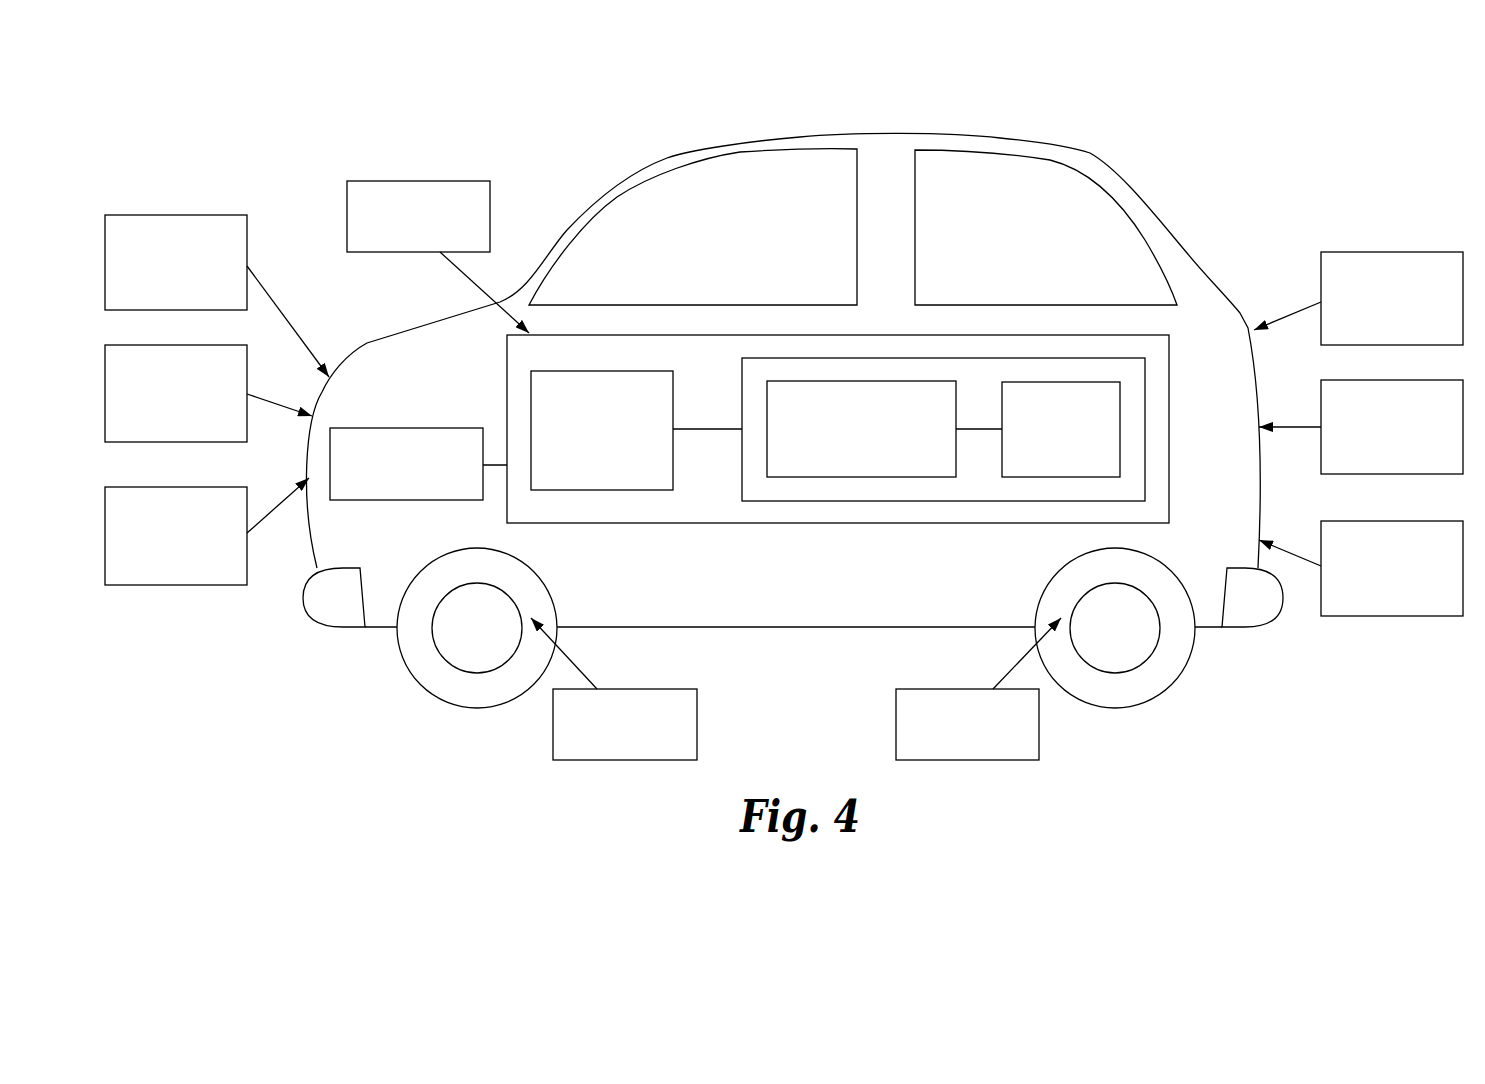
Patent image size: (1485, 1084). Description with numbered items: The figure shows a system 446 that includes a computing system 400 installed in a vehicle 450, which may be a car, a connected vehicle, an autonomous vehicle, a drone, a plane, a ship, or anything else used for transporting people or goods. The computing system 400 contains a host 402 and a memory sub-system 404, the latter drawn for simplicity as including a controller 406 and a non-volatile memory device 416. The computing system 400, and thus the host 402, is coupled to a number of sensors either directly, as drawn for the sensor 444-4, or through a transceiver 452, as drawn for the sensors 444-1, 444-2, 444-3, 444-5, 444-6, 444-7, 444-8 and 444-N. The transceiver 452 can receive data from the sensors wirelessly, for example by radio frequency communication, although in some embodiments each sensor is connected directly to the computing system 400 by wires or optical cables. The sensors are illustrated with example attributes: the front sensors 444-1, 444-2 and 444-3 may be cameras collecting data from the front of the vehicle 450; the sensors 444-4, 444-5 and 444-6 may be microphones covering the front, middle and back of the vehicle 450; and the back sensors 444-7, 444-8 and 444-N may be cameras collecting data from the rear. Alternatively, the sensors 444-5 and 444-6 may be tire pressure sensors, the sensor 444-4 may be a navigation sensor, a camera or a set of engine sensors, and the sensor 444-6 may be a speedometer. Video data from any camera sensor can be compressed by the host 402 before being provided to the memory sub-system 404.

The system 446 is at (250, 53).
The vehicle 450 is at (642, 162).
The non-volatile memory device 416 is at (1110, 428).
The computing system 400 is at (685, 518).
The host 402 is at (618, 455).
The memory sub-system 404 is at (865, 493).
The controller 406 is at (878, 455).
The transceiver 452 is at (422, 490).
The sensor 444-1 is at (177, 223).
The sensor 444-2 is at (177, 436).
The sensor 444-3 is at (177, 578).
The sensor 444-4 is at (420, 181).
The sensor 444-5 is at (625, 756).
The sensor 444-6 is at (968, 756).
The sensor 444-7 is at (1390, 611).
The sensor 444-8 is at (1390, 470).
The sensor 444-N is at (1390, 257).